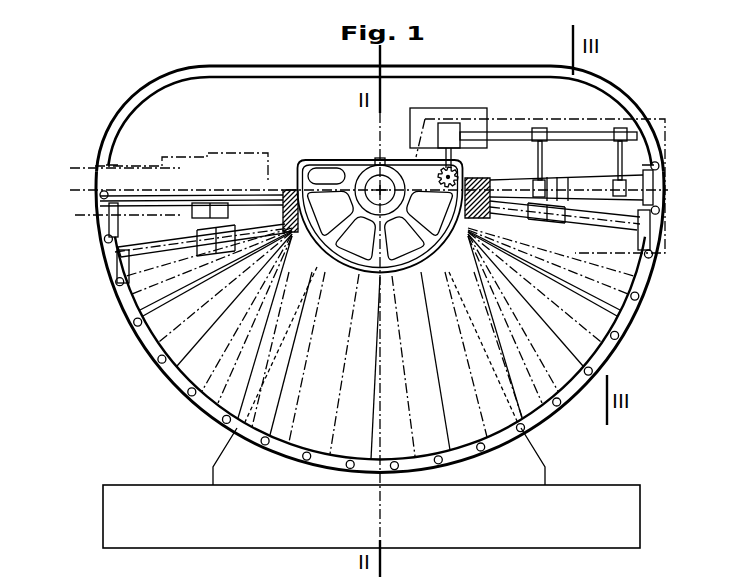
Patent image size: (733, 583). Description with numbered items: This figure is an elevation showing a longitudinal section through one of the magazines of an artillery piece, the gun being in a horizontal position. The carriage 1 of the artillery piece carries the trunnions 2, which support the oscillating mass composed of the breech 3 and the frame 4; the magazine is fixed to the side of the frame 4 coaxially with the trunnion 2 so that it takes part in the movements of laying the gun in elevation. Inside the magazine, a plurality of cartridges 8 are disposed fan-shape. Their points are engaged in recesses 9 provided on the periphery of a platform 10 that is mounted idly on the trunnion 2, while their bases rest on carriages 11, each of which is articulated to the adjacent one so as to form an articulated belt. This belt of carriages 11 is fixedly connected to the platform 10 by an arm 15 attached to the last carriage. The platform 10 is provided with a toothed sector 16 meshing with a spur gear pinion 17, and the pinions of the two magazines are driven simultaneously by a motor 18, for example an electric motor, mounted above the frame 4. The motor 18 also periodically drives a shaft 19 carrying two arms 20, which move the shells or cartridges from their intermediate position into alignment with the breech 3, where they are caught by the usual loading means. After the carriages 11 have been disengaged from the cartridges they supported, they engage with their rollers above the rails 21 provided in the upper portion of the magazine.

The carriage 1 is at (580, 497).
The trunnions 2 is at (371, 173).
The breech 3 is at (223, 155).
The frame 4 is at (603, 327).
The cartridges 8 is at (142, 262).
The recesses 9 is at (142, 336).
The platform 10 is at (310, 159).
The carriages 11 is at (118, 267).
The arm 15 is at (133, 190).
The toothed sectors 16 is at (447, 200).
The spur gear pinion 17 is at (457, 161).
The motor 18 is at (444, 108).
The shaft 19 is at (513, 132).
The arms 20 is at (619, 176).
The rails 21 is at (198, 77).